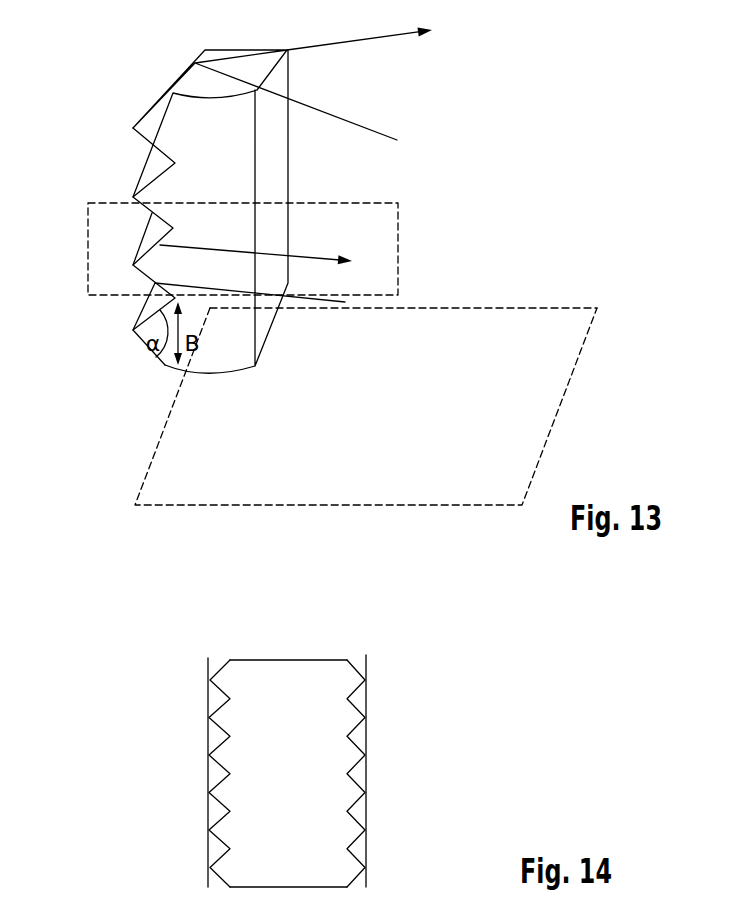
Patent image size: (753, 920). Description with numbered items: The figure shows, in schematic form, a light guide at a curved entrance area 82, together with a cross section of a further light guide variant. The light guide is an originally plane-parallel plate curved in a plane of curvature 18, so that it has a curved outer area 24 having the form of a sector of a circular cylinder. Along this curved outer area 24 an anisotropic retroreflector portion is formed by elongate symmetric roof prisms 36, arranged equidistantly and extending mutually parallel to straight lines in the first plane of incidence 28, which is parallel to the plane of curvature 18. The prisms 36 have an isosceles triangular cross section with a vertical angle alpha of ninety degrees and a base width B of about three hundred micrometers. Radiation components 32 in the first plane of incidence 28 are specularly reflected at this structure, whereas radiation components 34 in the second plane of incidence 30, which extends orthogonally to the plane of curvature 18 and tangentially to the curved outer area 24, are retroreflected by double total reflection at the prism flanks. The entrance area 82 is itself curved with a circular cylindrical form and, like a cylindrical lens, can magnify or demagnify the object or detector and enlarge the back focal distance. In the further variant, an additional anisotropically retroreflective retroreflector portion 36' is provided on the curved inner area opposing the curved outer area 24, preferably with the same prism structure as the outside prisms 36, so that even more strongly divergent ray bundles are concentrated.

In FIG. 13, the plane of curvature 18 is at (560, 325).
In FIG. 14, the curved outer area 24 is at (208, 700).
In FIG. 13, the first plane of incidence 28 is at (460, 315).
In FIG. 13, the second plane of incidence 30 is at (393, 263).
In FIG. 13, the radiation components in the first plane of incidence 32 is at (405, 40).
In FIG. 13, the radiation components in the second plane of incidence 34 is at (313, 252).
In FIG. 13, the prisms 36 is at (108, 246).
In FIG. 14, the prisms 36 is at (184, 773).
In FIG. 14, the retroreflector portion on the curved inner area 36' is at (396, 773).
In FIG. 13, the entrance area 82 is at (217, 350).
In FIG. 14, the entrance area 82 is at (365, 698).